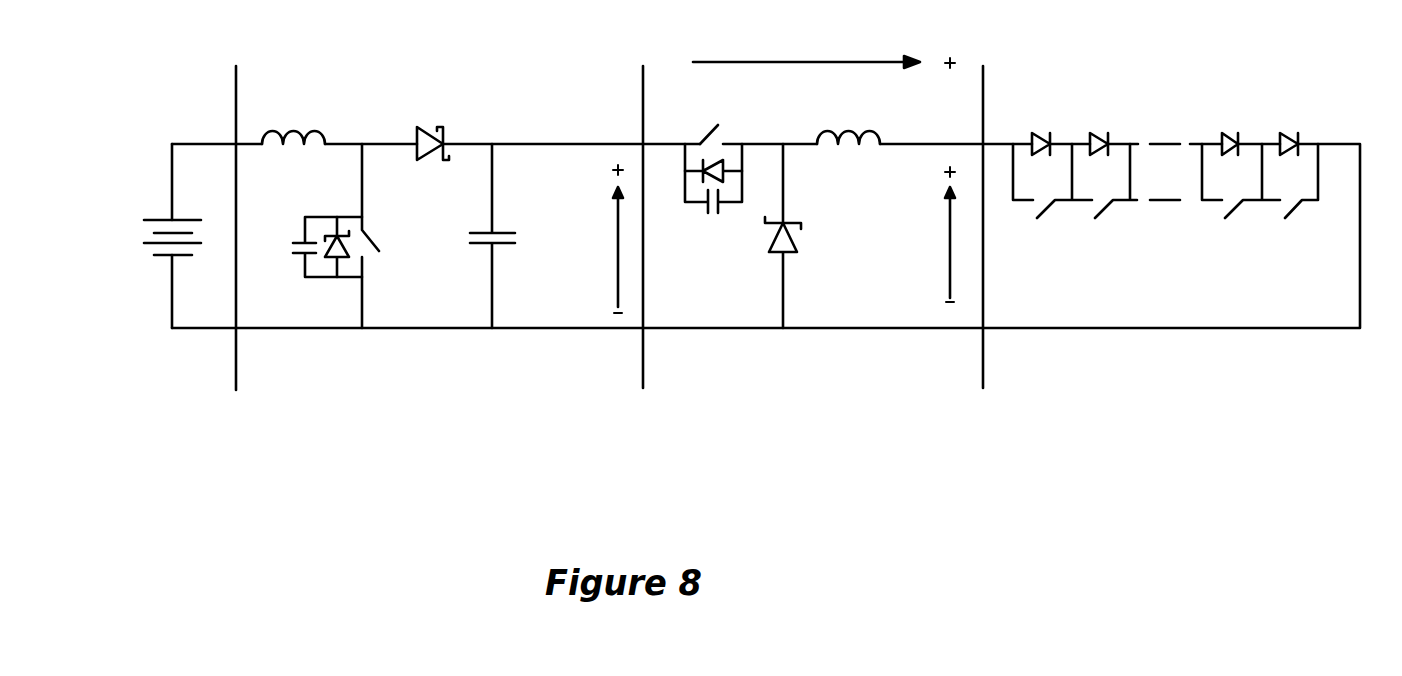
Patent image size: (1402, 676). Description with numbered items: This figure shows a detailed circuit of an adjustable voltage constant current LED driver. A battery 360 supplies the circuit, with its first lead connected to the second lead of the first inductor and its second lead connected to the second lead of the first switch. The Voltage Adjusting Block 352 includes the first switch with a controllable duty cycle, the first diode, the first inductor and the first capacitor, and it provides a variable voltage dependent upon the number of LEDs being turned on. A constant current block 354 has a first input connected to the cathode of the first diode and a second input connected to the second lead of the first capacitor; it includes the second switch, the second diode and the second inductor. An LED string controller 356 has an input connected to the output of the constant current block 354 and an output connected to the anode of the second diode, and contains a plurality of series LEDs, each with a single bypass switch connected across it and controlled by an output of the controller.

The battery 360 is at (172, 215).
The voltage adjusting block 352 is at (357, 398).
The constant current block 354 is at (743, 397).
The LED string controller 356 is at (1073, 395).